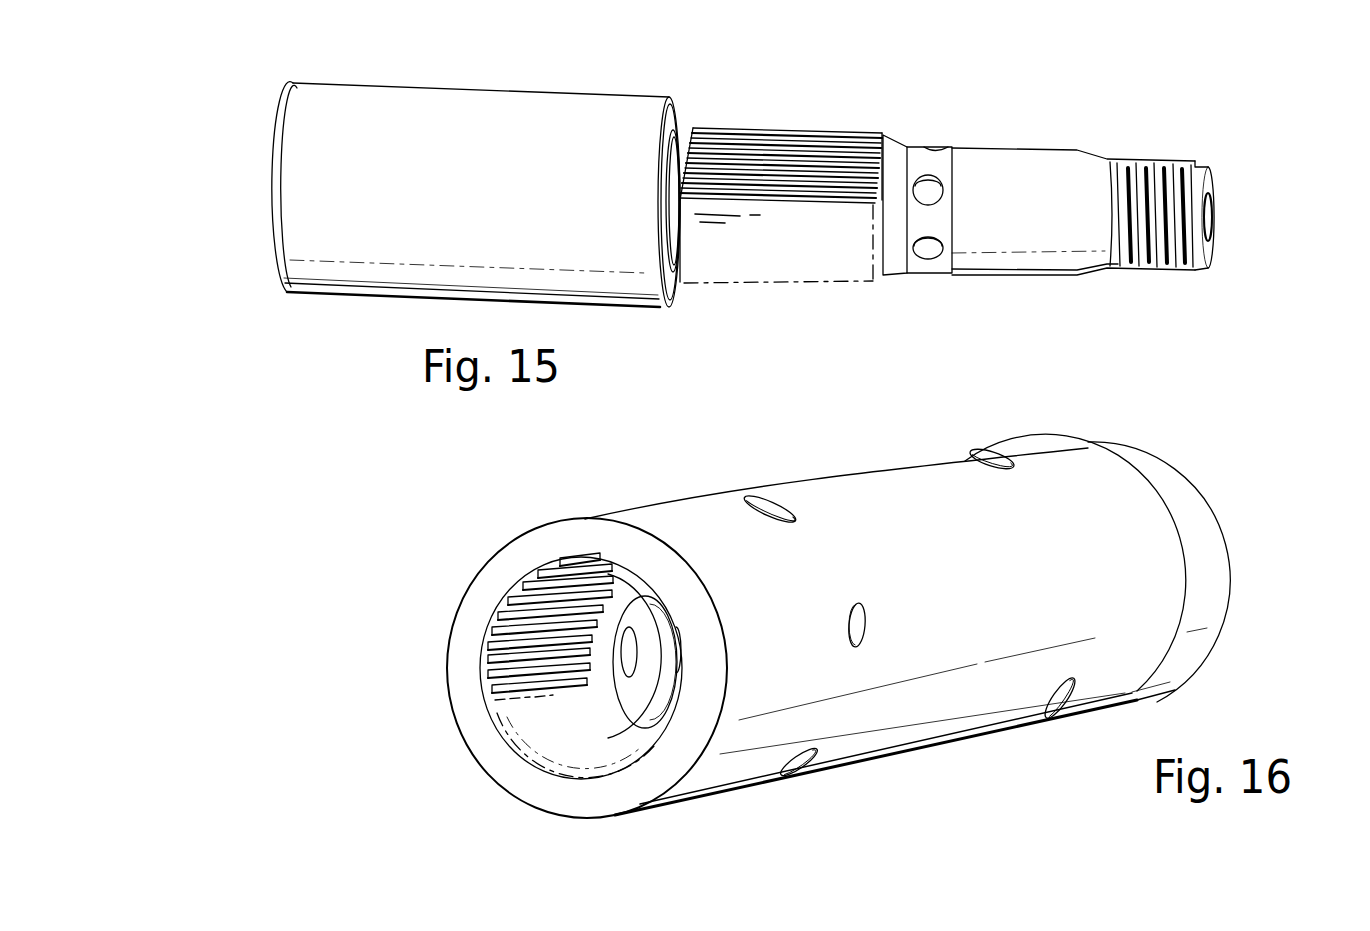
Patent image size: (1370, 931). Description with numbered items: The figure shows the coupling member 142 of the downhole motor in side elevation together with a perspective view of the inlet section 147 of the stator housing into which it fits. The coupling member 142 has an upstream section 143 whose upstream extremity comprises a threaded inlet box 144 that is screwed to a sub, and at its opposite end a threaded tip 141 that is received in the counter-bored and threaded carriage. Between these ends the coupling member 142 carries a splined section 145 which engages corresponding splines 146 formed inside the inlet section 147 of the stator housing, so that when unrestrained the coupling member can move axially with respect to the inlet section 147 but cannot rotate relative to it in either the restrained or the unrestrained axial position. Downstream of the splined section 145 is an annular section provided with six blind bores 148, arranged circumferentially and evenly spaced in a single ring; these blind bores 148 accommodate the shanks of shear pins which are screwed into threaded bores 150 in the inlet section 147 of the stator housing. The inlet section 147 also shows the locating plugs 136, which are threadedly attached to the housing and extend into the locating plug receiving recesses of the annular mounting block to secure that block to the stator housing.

In FIG. 16, the locating plugs 136 is at (988, 453).
In FIG. 15, the threaded tip 141 is at (1180, 218).
In FIG. 15, the coupling member 142 is at (550, 88).
In FIG. 15, the upstream section 143 is at (416, 163).
In FIG. 15, the threaded inlet box 144 is at (272, 190).
In FIG. 15, the splined section 145 is at (792, 118).
In FIG. 16, the splines 146 is at (530, 620).
In FIG. 16, the inlet section 147 is at (930, 546).
In FIG. 15, the blind bores 148 is at (943, 190).
In FIG. 16, the threaded bores 150 is at (850, 626).